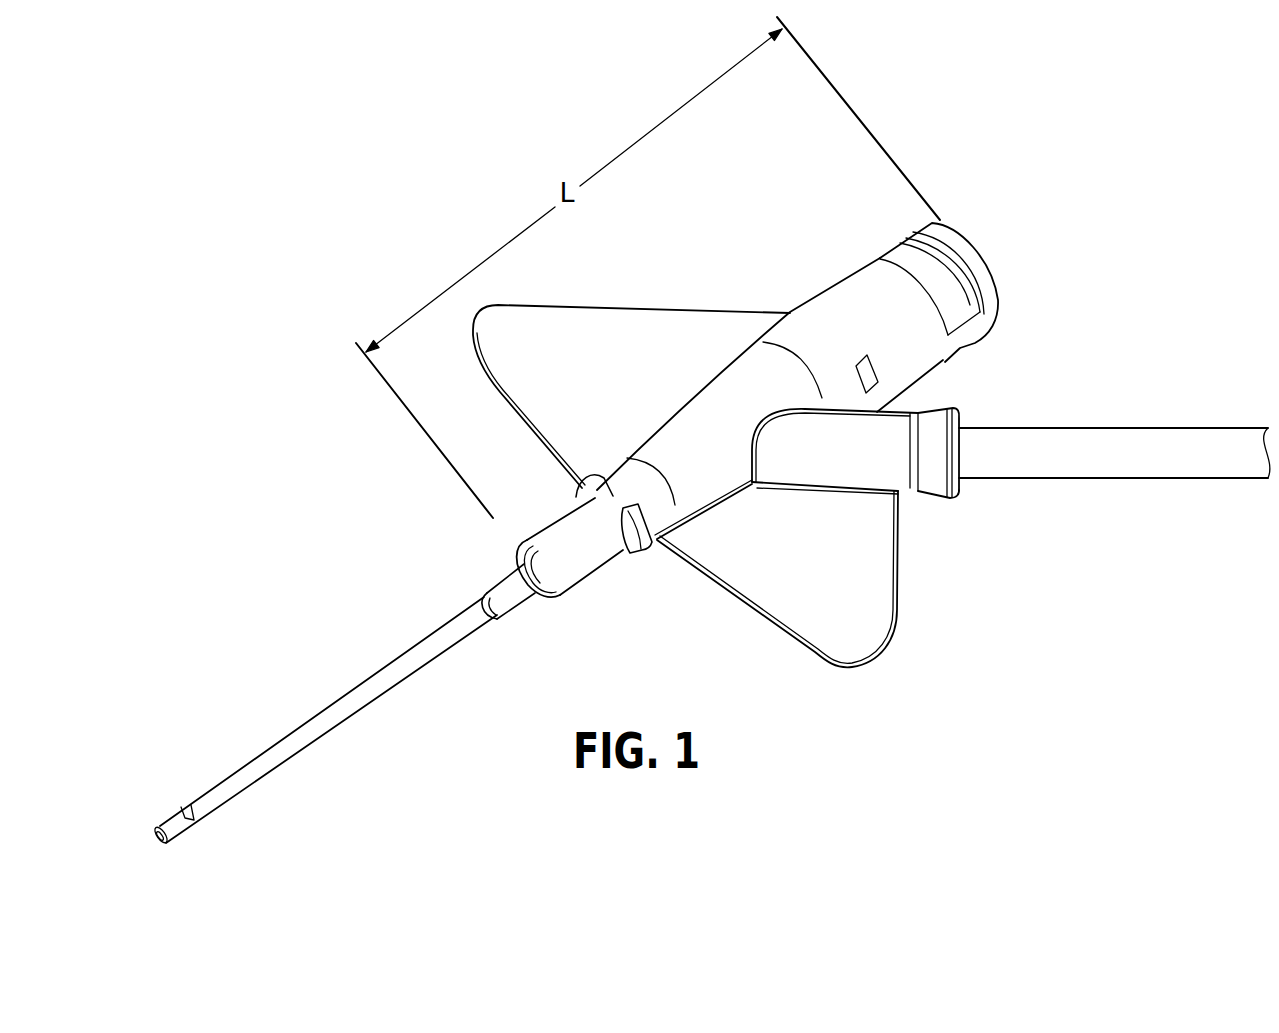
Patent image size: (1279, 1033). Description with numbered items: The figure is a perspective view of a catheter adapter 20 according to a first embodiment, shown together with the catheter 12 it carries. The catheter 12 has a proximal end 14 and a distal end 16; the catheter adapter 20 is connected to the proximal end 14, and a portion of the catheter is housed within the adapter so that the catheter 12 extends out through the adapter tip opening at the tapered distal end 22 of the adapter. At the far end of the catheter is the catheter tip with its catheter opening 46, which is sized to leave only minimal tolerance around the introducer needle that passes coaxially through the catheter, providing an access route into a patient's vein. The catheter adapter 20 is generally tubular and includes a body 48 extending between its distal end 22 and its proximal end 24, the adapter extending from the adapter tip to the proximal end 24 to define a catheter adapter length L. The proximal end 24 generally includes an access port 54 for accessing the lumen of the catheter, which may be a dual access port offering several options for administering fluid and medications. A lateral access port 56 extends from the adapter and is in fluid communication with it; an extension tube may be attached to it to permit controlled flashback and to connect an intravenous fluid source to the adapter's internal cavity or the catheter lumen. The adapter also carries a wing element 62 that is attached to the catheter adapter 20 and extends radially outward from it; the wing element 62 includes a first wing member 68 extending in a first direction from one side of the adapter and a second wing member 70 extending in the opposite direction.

The catheter 12 is at (320, 713).
The proximal end 14 is at (517, 598).
The distal end 16 is at (154, 816).
The catheter adapter 20 is at (686, 261).
The distal end 22 is at (538, 493).
The proximal end 24 is at (886, 225).
The catheter opening 46 is at (149, 842).
The body 48 is at (835, 318).
The access port 54 is at (980, 258).
The lateral access port 56 is at (950, 498).
The wing element 62 is at (858, 585).
The first wing member 68 is at (610, 330).
The second wing member 70 is at (770, 585).